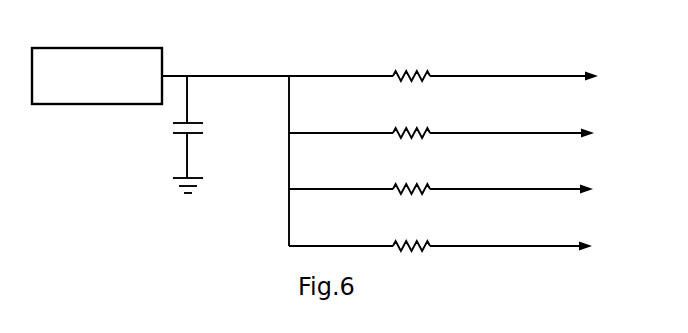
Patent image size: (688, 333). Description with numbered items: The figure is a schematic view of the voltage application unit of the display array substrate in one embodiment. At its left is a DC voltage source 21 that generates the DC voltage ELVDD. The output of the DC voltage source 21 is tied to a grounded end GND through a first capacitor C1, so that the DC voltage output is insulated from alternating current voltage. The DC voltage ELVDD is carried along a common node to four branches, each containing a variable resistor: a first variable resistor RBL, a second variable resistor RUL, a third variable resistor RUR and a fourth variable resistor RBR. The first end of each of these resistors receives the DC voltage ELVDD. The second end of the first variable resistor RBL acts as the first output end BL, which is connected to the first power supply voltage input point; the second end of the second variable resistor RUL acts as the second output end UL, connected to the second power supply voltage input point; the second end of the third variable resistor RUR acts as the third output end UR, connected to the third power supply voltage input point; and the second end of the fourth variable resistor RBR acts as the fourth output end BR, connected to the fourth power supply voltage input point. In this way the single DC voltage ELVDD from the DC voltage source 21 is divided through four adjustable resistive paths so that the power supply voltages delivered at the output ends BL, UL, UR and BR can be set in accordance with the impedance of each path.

The DC voltage source 21 is at (162, 30).
The first capacitor C1 is at (201, 127).
The DC voltage ELVDD is at (277, 150).
The grounded end GND is at (208, 186).
The first variable resistor RBL is at (411, 61).
The second variable resistor RUL is at (411, 117).
The third variable resistor RUR is at (411, 173).
The fourth variable resistor RBR is at (413, 230).
The first output end BL is at (514, 69).
The second output end UL is at (512, 126).
The third output end UR is at (511, 182).
The fourth output end BR is at (511, 237).